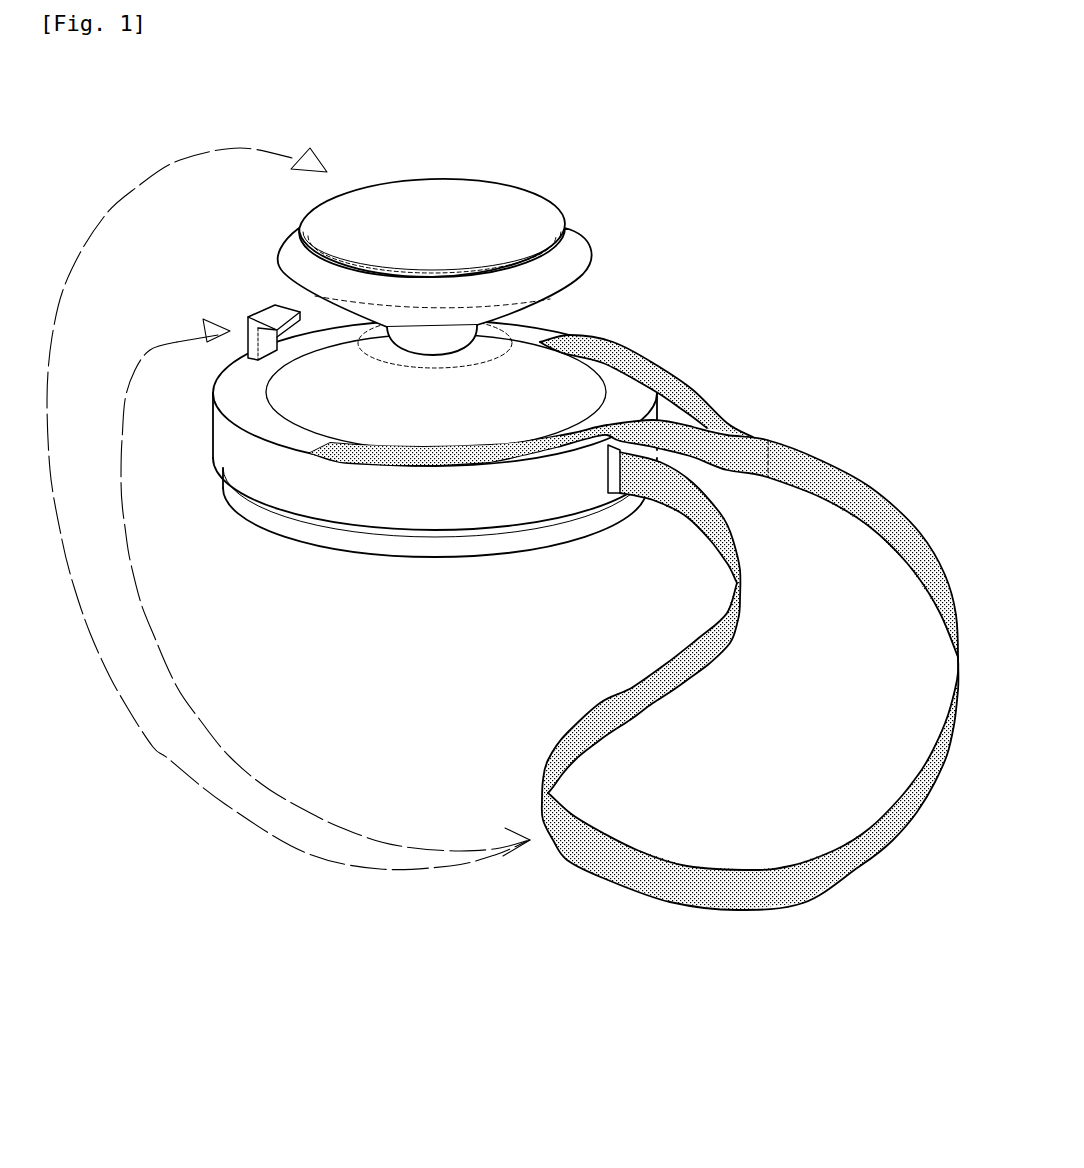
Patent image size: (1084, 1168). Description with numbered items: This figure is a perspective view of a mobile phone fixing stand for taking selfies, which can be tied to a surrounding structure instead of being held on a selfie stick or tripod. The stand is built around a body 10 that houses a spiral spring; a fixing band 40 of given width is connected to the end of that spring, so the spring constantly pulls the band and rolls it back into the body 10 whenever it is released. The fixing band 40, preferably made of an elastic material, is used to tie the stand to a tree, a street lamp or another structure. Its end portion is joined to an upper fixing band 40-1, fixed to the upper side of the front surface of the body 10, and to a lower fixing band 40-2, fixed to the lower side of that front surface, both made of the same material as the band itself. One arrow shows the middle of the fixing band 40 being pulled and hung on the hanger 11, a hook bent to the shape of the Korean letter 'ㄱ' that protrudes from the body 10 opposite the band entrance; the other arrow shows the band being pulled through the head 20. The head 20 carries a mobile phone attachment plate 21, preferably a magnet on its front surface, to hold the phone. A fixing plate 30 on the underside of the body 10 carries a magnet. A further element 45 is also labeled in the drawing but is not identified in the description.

The body 10 is at (433, 507).
The hanger 11 is at (270, 312).
The head 20 is at (577, 245).
The mobile phone attachment plate 21 is at (490, 197).
The fixing plate 30 is at (291, 528).
The fixing band 40 is at (737, 912).
The upper fixing band 40-1 is at (707, 387).
The lower fixing band 40-2 is at (747, 443).
The strap connecting portion 45 is at (318, 450).